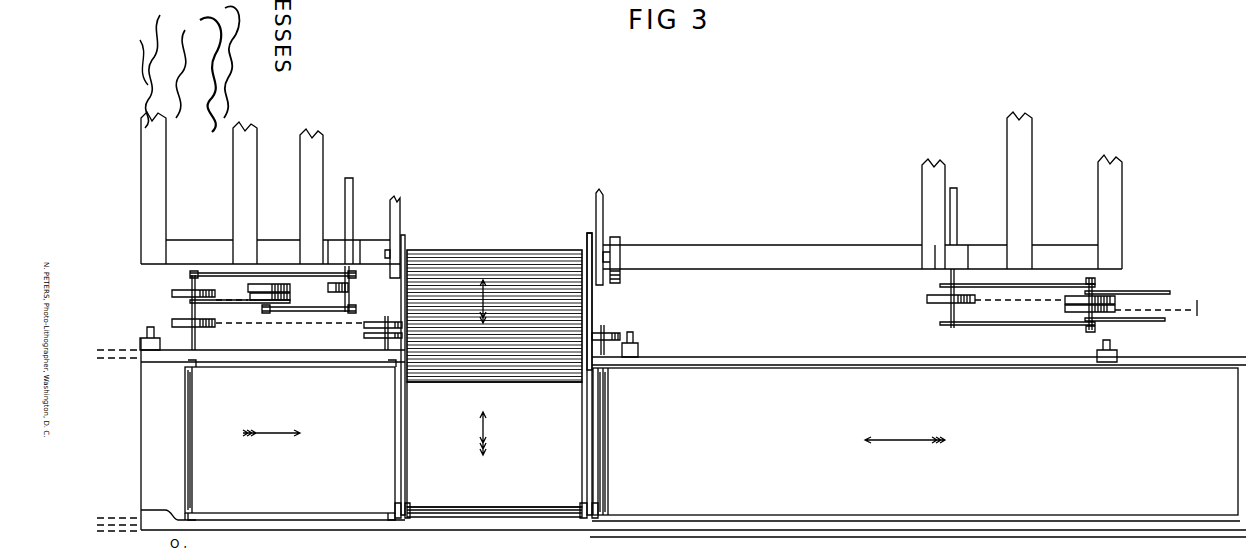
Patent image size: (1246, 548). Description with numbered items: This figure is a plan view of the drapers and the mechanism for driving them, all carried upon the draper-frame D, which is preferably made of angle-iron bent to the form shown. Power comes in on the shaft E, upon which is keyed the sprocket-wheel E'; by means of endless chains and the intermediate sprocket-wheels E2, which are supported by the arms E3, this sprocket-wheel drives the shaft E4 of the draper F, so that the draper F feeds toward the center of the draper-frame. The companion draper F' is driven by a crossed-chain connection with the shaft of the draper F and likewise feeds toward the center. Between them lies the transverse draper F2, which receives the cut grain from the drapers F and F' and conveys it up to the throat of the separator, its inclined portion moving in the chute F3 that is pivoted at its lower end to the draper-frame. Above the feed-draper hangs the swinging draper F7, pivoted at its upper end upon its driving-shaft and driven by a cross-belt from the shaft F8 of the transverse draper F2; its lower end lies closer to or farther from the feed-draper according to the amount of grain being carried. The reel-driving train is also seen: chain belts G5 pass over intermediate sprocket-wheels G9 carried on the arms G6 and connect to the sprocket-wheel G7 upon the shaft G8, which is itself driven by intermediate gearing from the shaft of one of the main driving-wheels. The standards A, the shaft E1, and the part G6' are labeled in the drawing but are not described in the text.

The frame standards A is at (631, 190).
The draper-frame D is at (140, 336).
The shaft E is at (357, 221).
The shaft E1 is at (190, 275).
The sprocket-wheel E' is at (355, 295).
The intermediate sprocket-wheels E2 is at (292, 296).
The arms E3 is at (290, 312).
The shaft of the draper E4 is at (196, 338).
The draper F is at (290, 440).
The draper F' is at (915, 441).
The transverse draper F2 is at (496, 450).
The chute F3 is at (592, 305).
The swinging draper F7 is at (440, 262).
The shaft of the transverse draper F8 is at (638, 226).
The chain belts G5 is at (1161, 299).
The arms G6 is at (1105, 333).
The rollers G6' is at (1122, 321).
The sprocket-wheel G7 is at (927, 303).
The shaft G8 is at (957, 218).
The intermediate sprocket-wheels G9 is at (1110, 296).